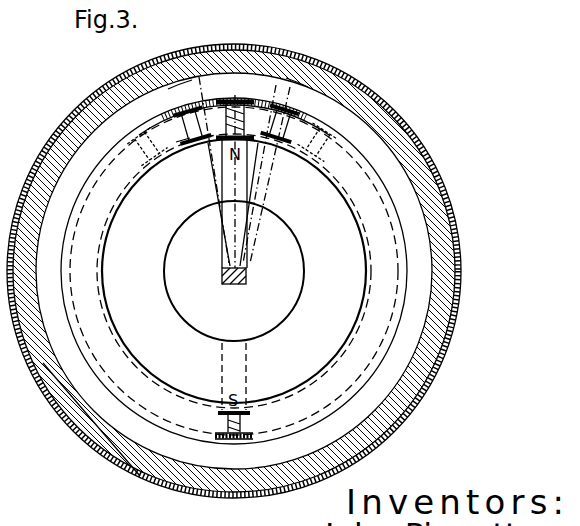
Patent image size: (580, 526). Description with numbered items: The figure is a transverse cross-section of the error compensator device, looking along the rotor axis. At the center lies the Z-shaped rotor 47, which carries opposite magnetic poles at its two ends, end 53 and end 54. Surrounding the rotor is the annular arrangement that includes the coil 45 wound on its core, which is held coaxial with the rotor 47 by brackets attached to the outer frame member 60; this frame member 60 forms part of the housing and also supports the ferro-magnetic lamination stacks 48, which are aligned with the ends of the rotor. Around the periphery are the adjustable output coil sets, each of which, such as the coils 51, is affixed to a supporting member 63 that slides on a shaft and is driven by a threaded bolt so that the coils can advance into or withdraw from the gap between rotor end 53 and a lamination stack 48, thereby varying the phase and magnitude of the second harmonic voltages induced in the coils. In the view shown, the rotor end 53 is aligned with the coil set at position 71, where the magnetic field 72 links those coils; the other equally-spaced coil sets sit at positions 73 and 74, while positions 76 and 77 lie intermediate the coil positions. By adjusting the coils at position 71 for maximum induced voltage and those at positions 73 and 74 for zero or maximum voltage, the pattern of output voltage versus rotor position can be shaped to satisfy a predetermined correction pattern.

The coil 45 is at (356, 309).
The Z-shaped rotor 47 is at (246, 277).
The lamination stacks 48 is at (408, 354).
The coils 51 is at (198, 68).
The end of rotor 53 is at (183, 140).
The end of rotor 54 is at (200, 442).
The frame member 60 is at (441, 229).
The supporting member 63 is at (178, 118).
The coil set position 71 is at (236, 95).
The magnetic field 72 is at (290, 87).
The coil set position 73 is at (187, 85).
The coil set position 74 is at (295, 80).
The intermediate position 76 is at (198, 77).
The intermediate position 77 is at (276, 85).